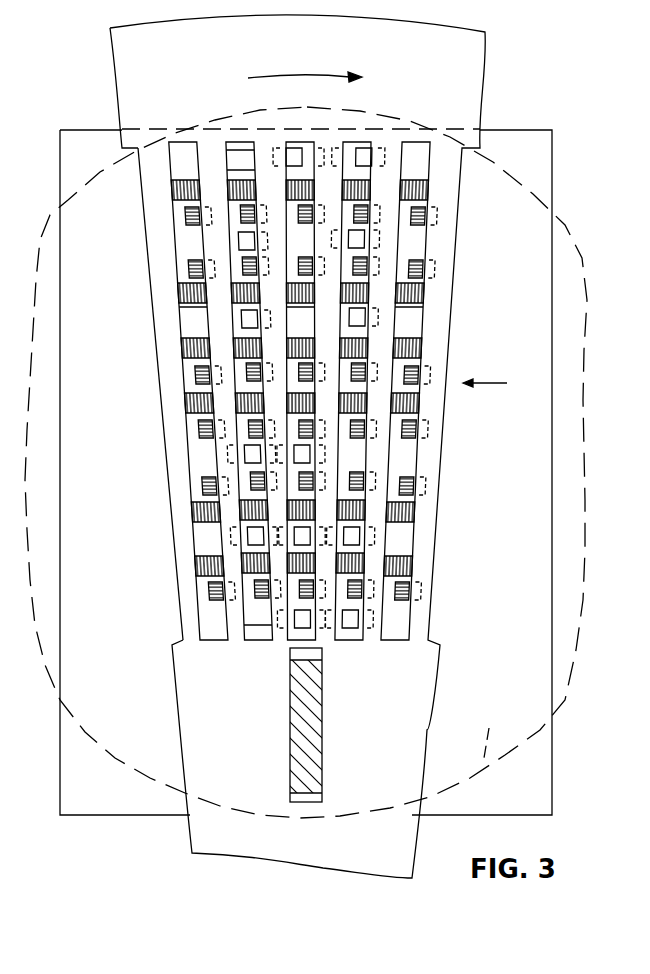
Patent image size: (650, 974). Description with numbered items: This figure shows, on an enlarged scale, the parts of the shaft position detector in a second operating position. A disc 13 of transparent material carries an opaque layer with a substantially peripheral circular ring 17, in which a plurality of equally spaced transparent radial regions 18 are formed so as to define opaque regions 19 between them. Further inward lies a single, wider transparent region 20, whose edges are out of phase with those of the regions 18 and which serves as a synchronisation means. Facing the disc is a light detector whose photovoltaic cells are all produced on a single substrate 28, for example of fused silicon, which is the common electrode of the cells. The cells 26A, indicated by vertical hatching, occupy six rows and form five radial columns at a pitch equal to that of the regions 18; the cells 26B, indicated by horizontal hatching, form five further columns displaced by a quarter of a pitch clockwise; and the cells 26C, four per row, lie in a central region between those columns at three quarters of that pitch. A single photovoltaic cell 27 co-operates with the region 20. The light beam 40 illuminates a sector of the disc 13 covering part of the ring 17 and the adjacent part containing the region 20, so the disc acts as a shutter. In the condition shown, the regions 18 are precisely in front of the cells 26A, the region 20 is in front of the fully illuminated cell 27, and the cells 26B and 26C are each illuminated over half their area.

The disc 13 is at (481, 97).
The substrate 28 is at (527, 140).
The circular ring 17 is at (496, 385).
The transparent radial regions 18 is at (154, 391).
The opaque regions 19 is at (176, 433).
The photovoltaic cells 26A is at (182, 293).
The photovoltaic cells 26B is at (190, 264).
The photovoltaic cells 26C is at (246, 320).
The transparent region 20 is at (294, 725).
The photovoltaic cell 27 is at (297, 725).
The light beam 40 is at (478, 772).